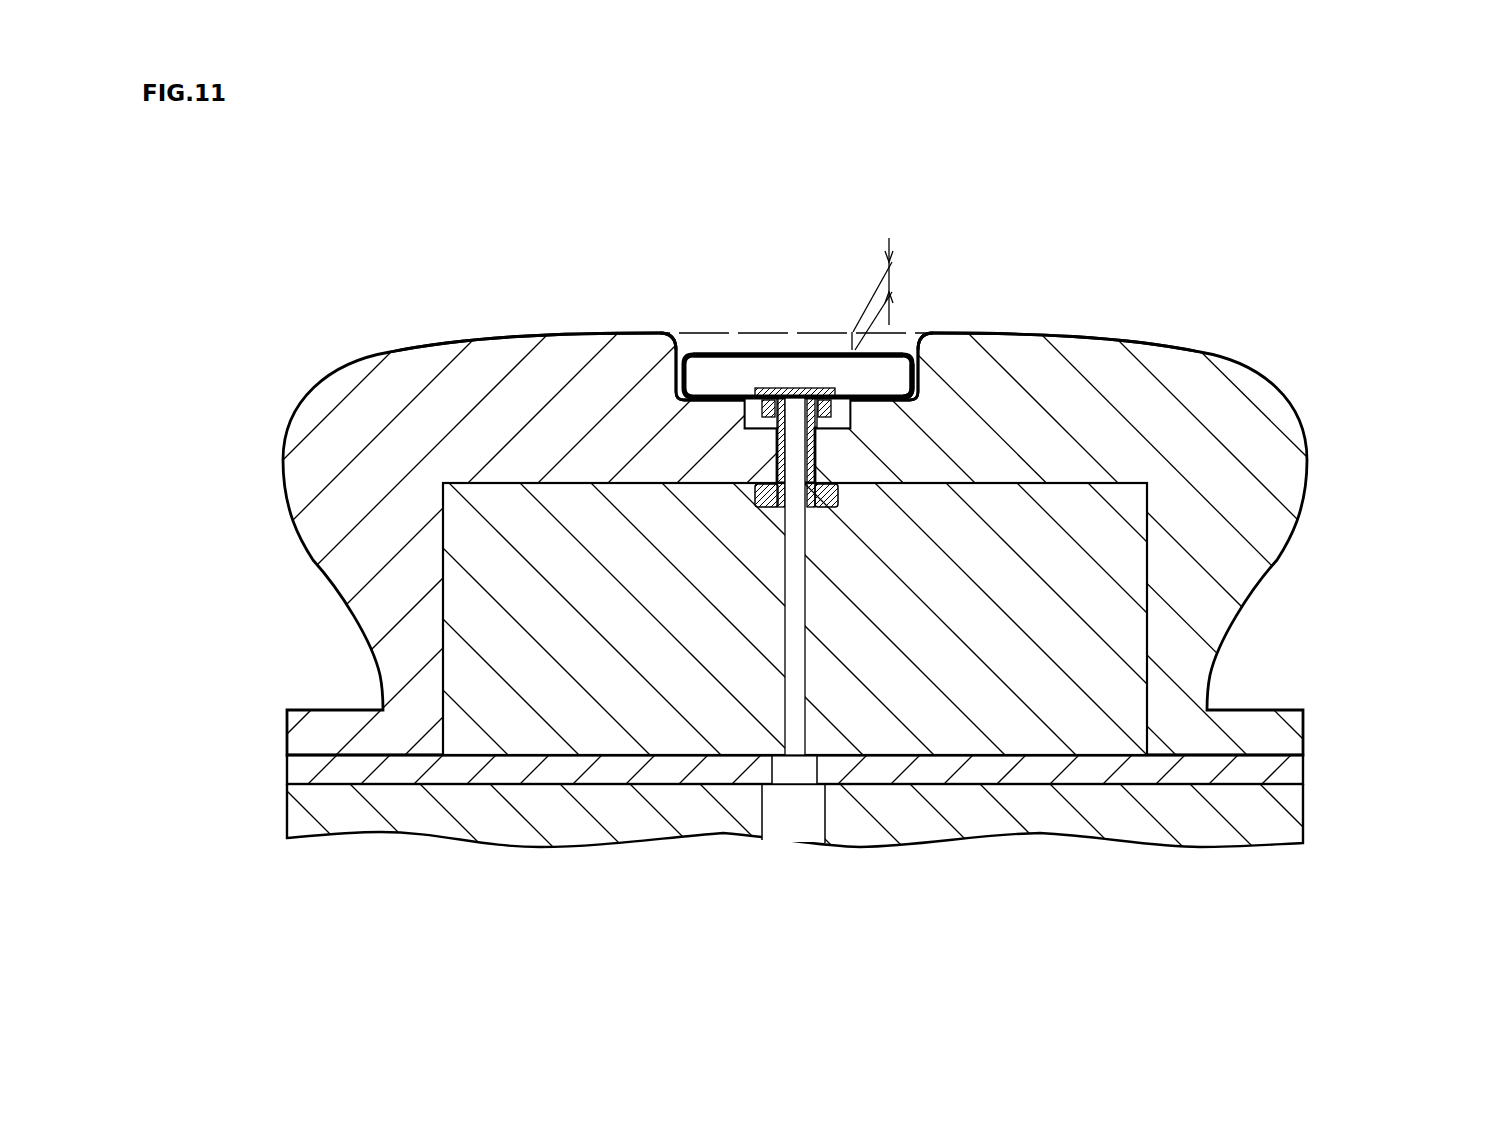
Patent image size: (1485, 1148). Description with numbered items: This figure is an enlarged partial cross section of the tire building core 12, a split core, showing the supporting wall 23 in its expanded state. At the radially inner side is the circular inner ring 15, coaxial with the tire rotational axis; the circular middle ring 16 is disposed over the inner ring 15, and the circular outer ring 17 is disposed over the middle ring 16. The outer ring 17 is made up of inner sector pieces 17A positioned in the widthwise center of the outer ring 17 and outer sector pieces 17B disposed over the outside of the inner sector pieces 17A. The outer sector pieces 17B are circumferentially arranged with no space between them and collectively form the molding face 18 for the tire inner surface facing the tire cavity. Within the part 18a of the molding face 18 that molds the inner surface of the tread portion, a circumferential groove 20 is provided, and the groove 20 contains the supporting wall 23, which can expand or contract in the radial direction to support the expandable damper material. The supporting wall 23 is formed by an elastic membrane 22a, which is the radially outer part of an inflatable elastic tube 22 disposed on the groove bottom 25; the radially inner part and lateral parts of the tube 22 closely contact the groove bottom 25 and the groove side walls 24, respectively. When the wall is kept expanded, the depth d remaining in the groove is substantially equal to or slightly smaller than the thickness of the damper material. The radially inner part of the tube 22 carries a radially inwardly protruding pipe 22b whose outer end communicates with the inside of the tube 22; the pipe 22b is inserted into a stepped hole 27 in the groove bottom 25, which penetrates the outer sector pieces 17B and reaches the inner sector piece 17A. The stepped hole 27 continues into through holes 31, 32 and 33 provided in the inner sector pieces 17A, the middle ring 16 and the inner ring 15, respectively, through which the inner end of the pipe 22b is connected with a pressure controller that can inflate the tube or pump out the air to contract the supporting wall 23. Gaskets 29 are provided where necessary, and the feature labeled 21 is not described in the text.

The tire building core 12 is at (819, 570).
The inner ring 15 is at (1283, 822).
The middle ring 16 is at (1290, 770).
The outer ring 17 is at (819, 565).
The inner sector pieces 17A is at (493, 647).
The outer sector pieces 17B is at (377, 385).
The molding face 18 is at (443, 340).
The part for molding the tread inner surface 18a is at (1028, 335).
The circumferential groove 20 is at (692, 338).
The side wall of cover 21 is at (882, 392).
The inflatable elastic tube 22 is at (763, 565).
The elastic membrane 22a is at (810, 303).
The pipe 22b is at (783, 448).
The supporting wall 23 is at (827, 345).
The groove side walls 24 is at (662, 335).
The groove bottom 25 is at (722, 395).
The stepped hole 27 is at (757, 418).
The gaskets 29 is at (838, 493).
The through hole 31 is at (797, 640).
The through hole 32 is at (815, 760).
The through hole 33 is at (766, 806).
The depth d is at (881, 294).